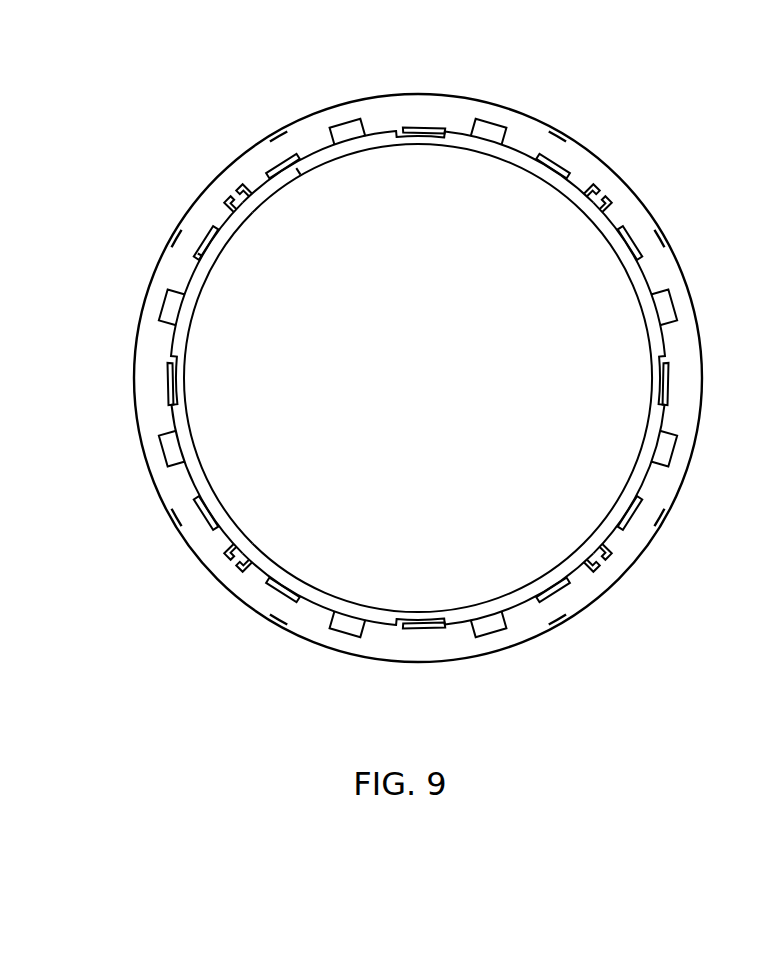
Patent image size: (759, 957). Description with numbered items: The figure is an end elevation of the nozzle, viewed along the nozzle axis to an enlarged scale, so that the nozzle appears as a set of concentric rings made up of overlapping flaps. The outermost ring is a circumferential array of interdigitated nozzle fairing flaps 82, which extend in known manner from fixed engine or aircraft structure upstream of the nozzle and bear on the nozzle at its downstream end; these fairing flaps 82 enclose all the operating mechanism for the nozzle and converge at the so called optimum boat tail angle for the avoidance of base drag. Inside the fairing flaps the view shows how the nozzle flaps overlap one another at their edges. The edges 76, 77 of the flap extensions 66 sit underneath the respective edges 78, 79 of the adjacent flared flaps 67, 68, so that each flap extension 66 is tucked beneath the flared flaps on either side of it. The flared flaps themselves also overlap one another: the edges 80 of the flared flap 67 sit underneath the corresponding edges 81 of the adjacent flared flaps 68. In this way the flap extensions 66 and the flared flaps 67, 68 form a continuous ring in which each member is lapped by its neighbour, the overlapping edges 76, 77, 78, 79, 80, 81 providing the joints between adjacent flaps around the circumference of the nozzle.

The nozzle fairing flaps 82 is at (512, 112).
The flap extensions 66 is at (252, 212).
The flared flap 67 is at (180, 330).
The flared flap 68 is at (183, 453).
The edge of flap extension 76 is at (290, 178).
The edge of flap extension 77 is at (212, 253).
The edge of flared flap 78 is at (292, 162).
The edge of flared flap 79 is at (211, 234).
The edge of flared flap 80 is at (175, 380).
The edge of flared flap 81 is at (162, 384).